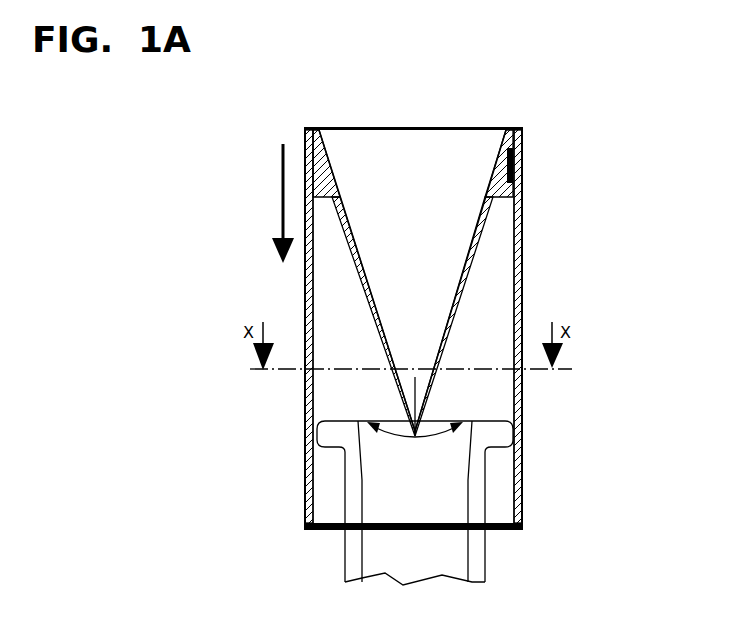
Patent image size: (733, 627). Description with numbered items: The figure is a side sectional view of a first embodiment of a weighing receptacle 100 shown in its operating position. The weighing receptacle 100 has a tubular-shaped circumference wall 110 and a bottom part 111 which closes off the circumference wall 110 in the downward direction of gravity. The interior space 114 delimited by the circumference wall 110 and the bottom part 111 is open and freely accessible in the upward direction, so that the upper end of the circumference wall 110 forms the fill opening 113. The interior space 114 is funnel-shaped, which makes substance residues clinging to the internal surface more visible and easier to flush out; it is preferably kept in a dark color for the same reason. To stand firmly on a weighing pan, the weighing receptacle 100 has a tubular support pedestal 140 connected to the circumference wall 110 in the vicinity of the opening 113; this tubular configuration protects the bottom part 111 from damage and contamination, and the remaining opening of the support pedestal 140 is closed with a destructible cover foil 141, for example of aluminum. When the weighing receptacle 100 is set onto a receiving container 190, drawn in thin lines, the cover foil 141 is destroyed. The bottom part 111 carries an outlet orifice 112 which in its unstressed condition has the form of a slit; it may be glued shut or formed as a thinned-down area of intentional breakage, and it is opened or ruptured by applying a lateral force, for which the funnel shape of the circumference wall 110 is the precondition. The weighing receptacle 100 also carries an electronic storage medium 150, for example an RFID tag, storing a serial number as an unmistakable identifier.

The weighing receptacle 100 is at (429, 103).
The tubular-shaped circumference wall 110 is at (480, 236).
The bottom part 111 is at (400, 407).
The outlet orifice 112 is at (417, 386).
The fill opening 113 is at (490, 94).
The interior space 114 is at (418, 258).
The support pedestal 140 is at (523, 463).
The cover foil 141 is at (340, 542).
The electronic storage medium 150 is at (513, 165).
The receiving container 190 is at (472, 547).